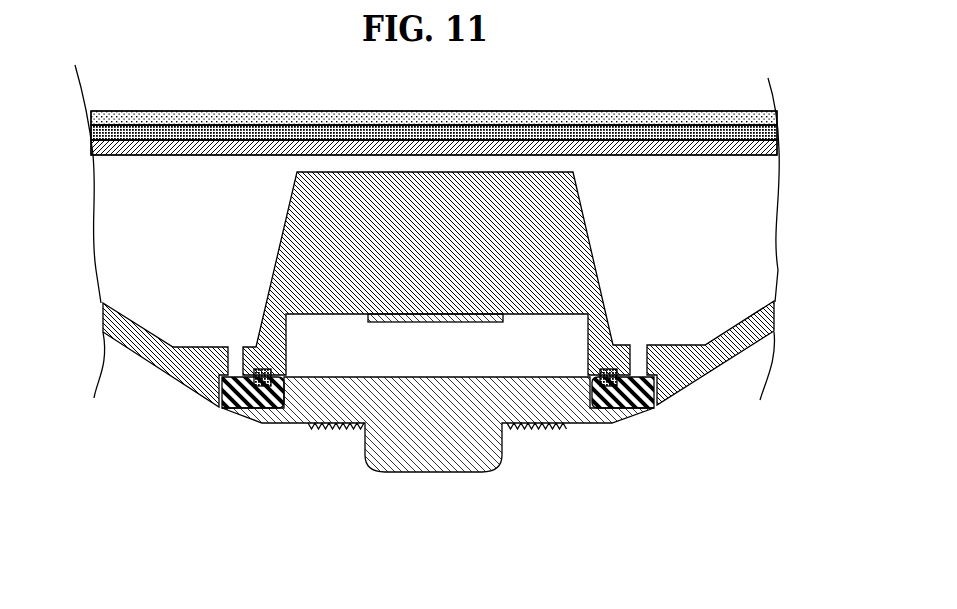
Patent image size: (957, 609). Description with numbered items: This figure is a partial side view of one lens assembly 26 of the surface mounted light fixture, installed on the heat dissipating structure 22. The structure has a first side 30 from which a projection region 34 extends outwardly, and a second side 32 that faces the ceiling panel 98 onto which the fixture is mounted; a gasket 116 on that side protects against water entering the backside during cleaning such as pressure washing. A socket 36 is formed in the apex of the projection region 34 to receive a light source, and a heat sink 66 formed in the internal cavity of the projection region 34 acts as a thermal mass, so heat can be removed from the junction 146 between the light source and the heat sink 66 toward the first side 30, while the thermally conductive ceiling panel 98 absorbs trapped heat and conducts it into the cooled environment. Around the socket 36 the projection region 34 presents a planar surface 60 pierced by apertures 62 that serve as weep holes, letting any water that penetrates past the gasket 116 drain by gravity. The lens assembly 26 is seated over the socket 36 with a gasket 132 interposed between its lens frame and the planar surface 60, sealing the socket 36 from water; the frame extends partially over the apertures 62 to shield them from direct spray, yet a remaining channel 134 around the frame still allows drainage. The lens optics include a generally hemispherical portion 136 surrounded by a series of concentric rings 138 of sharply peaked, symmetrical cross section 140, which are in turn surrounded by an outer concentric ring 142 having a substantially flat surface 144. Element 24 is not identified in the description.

The heat dissipating structure 22 is at (140, 358).
The die 24 is at (392, 322).
The lens assembly 26 is at (486, 528).
The first side 30 is at (758, 514).
The second side 32 is at (686, 132).
The projection region 34 is at (733, 358).
The socket 36 is at (437, 372).
The planar surface 60 is at (240, 408).
The aperture 62 is at (235, 340).
The heat sink 66 is at (293, 196).
The ceiling panel 98 is at (188, 118).
The gasket 116 is at (277, 130).
The gasket 132 is at (264, 370).
The channel 134 is at (216, 411).
The hemispherical portion 136 is at (478, 462).
The concentric rings 138 is at (346, 430).
The cross section 140 is at (365, 425).
The outer concentric ring 142 is at (297, 424).
The flat surface 144 is at (300, 428).
The junction 146 is at (520, 316).